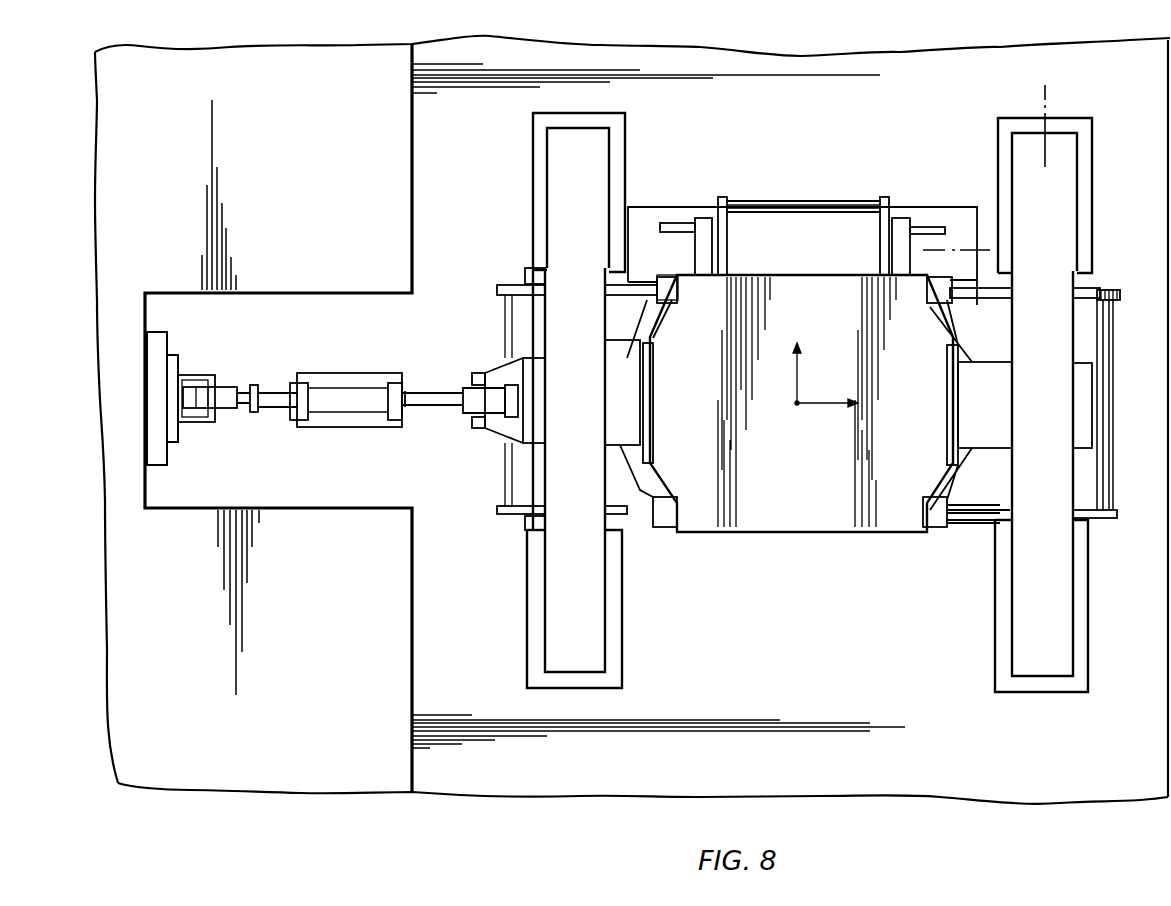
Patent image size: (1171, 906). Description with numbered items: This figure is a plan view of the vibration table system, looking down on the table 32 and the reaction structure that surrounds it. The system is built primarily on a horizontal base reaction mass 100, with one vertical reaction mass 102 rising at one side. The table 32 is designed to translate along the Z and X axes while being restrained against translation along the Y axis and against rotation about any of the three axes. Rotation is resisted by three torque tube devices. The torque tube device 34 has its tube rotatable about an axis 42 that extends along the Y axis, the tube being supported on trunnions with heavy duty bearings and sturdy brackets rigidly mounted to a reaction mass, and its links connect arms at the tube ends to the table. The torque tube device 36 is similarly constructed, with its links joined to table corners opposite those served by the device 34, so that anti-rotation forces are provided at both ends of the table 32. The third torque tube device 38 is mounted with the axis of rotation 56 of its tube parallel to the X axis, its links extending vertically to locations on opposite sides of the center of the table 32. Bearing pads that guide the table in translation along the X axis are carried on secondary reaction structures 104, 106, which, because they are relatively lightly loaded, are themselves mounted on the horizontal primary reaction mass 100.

The table 32 is at (800, 533).
The torque tube device 34 is at (1120, 292).
The torque tube device 36 is at (500, 334).
The torque tube device 38 is at (802, 207).
The axis 42 is at (1043, 93).
The axis of rotation 56 is at (962, 250).
The horizontal base reaction mass 100 is at (830, 668).
The vertical reaction mass 102 is at (150, 487).
The secondary reaction structure 104 is at (1012, 625).
The secondary reaction structure 106 is at (595, 623).